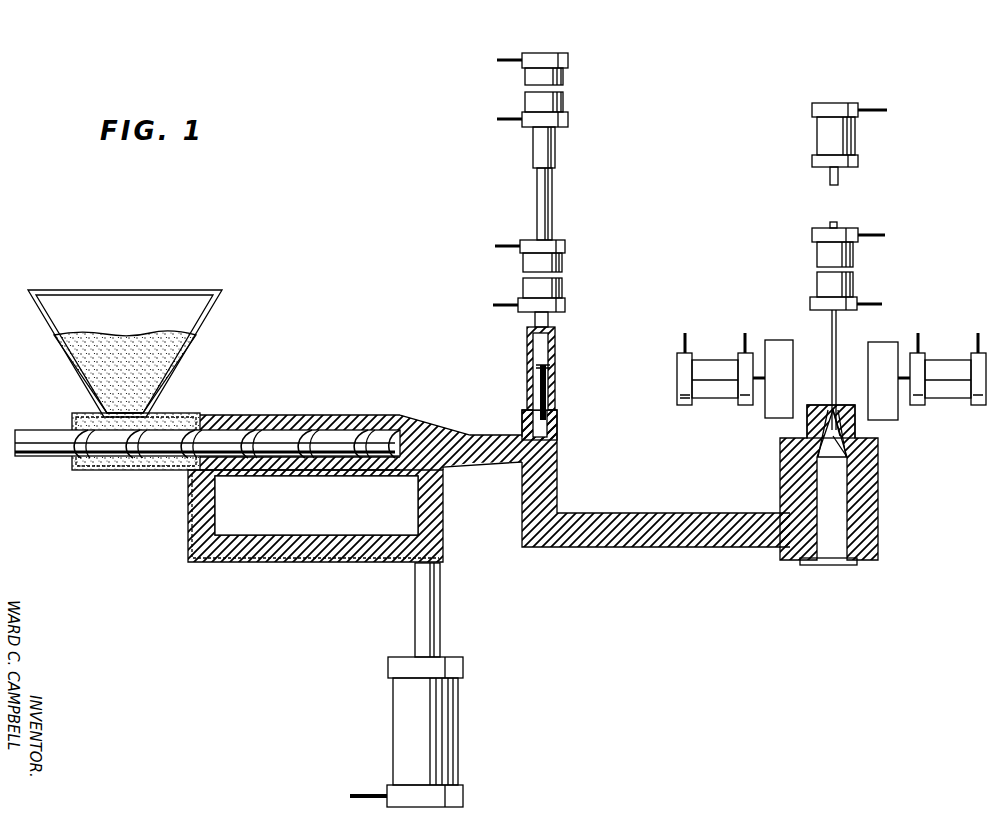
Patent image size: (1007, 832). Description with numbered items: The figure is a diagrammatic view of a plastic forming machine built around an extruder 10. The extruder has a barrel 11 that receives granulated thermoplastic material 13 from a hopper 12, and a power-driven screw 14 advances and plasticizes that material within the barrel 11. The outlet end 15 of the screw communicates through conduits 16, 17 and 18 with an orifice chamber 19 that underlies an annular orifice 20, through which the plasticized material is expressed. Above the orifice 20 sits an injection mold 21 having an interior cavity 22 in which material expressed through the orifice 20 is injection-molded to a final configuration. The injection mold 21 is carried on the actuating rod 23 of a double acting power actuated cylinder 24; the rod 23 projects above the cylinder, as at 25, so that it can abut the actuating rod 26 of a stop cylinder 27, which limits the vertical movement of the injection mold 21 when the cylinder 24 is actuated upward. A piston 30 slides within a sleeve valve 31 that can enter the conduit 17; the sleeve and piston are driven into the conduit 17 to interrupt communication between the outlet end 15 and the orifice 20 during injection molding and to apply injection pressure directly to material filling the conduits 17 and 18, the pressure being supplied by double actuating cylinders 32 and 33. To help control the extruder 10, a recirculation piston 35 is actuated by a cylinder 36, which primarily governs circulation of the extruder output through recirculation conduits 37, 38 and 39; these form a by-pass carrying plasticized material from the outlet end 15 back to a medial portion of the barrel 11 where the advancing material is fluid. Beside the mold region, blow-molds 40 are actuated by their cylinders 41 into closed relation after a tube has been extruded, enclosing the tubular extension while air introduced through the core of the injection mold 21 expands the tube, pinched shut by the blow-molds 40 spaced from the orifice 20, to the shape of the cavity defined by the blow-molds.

The extruder 10 is at (266, 413).
The barrel 11 is at (300, 418).
The hopper 12 is at (174, 389).
The granulated thermoplastic material 13 is at (97, 371).
The power-driven screw 14 is at (132, 458).
The outlet end 15 is at (404, 430).
The conduit 16 is at (492, 463).
The conduit 17 is at (558, 489).
The conduit 18 is at (675, 514).
The orifice chamber 19 is at (850, 487).
The annular orifice 20 is at (860, 434).
The injection mold 21 is at (838, 416).
The interior cavity 22 is at (800, 424).
The actuating rod 23 is at (838, 341).
The power actuated cylinder 24 is at (850, 287).
The rod projection 25 is at (830, 226).
The actuating rod 26 is at (840, 180).
The stop cylinder 27 is at (825, 136).
The piston 30 is at (558, 422).
The sleeve valve 31 is at (557, 394).
The double actuating cylinder 32 is at (562, 290).
The double actuating cylinder 33 is at (550, 108).
The recirculation piston 35 is at (434, 608).
The cylinder 36 is at (440, 719).
The recirculation conduit 37 is at (420, 498).
The recirculation conduit 38 is at (308, 535).
The recirculation conduit 39 is at (215, 507).
The blow-molds 40 is at (786, 372).
The cylinders 41 is at (712, 368).